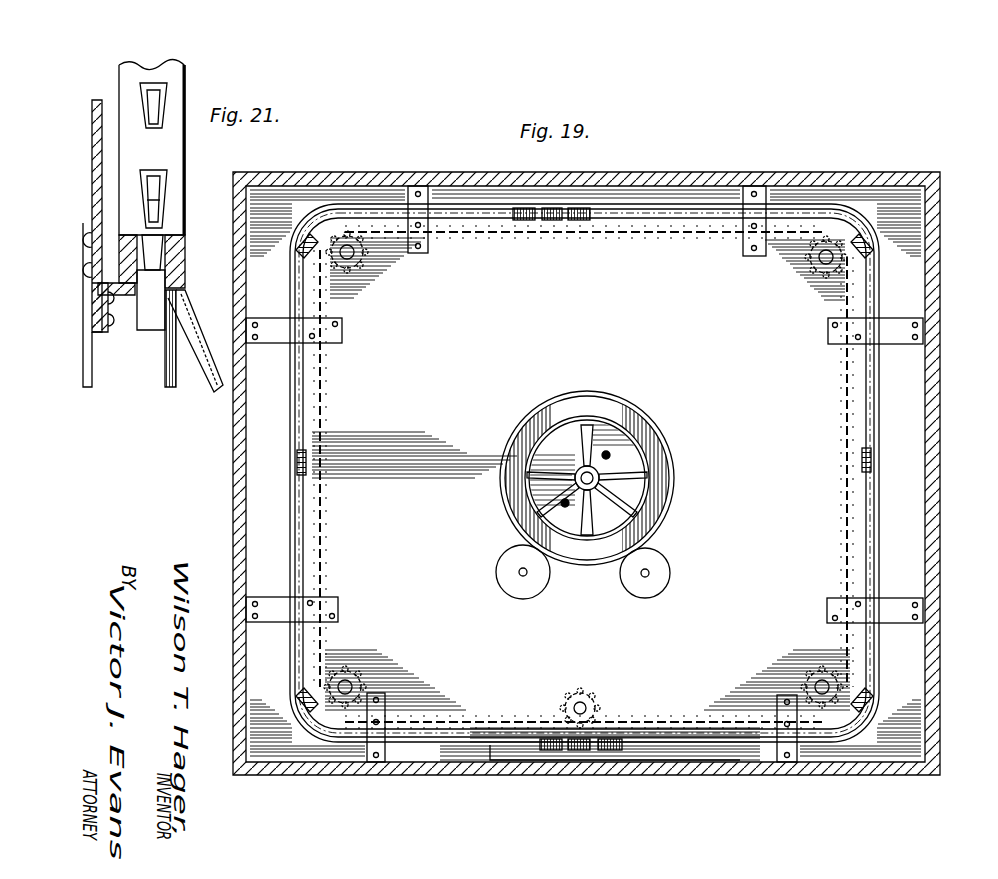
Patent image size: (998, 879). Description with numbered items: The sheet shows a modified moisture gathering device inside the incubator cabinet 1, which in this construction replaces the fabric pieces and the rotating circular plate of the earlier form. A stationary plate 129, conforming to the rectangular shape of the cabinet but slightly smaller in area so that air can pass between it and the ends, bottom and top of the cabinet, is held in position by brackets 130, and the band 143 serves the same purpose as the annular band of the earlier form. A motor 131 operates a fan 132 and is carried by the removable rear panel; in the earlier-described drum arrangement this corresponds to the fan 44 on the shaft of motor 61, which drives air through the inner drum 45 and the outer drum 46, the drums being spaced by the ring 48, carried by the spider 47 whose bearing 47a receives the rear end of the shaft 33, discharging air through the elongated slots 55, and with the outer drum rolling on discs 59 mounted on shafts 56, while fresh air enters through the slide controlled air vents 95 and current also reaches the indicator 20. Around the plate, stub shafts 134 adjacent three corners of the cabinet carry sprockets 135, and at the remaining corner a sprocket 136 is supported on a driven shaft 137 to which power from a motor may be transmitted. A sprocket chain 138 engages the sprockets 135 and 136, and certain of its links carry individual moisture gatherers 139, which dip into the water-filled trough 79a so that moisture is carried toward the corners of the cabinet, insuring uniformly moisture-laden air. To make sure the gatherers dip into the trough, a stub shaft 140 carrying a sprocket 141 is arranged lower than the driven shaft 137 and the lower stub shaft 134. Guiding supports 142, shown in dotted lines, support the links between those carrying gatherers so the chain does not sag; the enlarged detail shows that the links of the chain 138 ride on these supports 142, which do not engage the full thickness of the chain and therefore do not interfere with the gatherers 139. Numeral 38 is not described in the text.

In FIG. 19, the incubator cabinet 1 is at (232, 422).
In FIG. 19, the indicator 20 is at (568, 161).
In FIG. 19, the shaft 33 is at (598, 496).
In FIG. 19, the wall 38 is at (262, 481).
In FIG. 19, the fan 44 is at (660, 472).
In FIG. 19, the inner drum 45 is at (632, 432).
In FIG. 19, the outer drum 46 is at (603, 400).
In FIG. 19, the spider 47 is at (640, 490).
In FIG. 19, the bearing 47a is at (535, 465).
In FIG. 19, the ring 48 is at (650, 520).
In FIG. 19, the elongated slots 55 is at (522, 432).
In FIG. 19, the shafts 56 is at (525, 578).
In FIG. 19, the discs 59 is at (496, 573).
In FIG. 19, the motor 61 is at (640, 466).
In FIG. 19, the trough 79a is at (492, 766).
In FIG. 19, the slide controlled air vents 95 is at (591, 484).
In FIG. 21, the stationary plate 129 is at (92, 106).
In FIG. 19, the stationary plate 129 is at (820, 395).
In FIG. 21, the brackets 130 is at (88, 388).
In FIG. 19, the brackets 130 is at (420, 190).
In FIG. 19, the motor 131 is at (578, 455).
In FIG. 19, the fan 132 is at (530, 480).
In FIG. 19, the stub shafts 134 is at (352, 270).
In FIG. 19, the sprockets 135 is at (368, 258).
In FIG. 19, the sprocket 136 is at (818, 672).
In FIG. 19, the driven shaft 137 is at (810, 681).
In FIG. 21, the sprocket chain 138 is at (132, 272).
In FIG. 19, the sprocket chain 138 is at (653, 240).
In FIG. 21, the moisture gatherers 139 is at (192, 372).
In FIG. 19, the moisture gatherers 139 is at (578, 222).
In FIG. 19, the stub shaft 140 is at (588, 704).
In FIG. 21, the sprocket 141 is at (160, 181).
In FIG. 19, the sprocket 141 is at (578, 690).
In FIG. 21, the guiding supports 142 is at (122, 296).
In FIG. 19, the guiding supports 142 is at (460, 718).
In FIG. 19, the band 143 is at (628, 206).